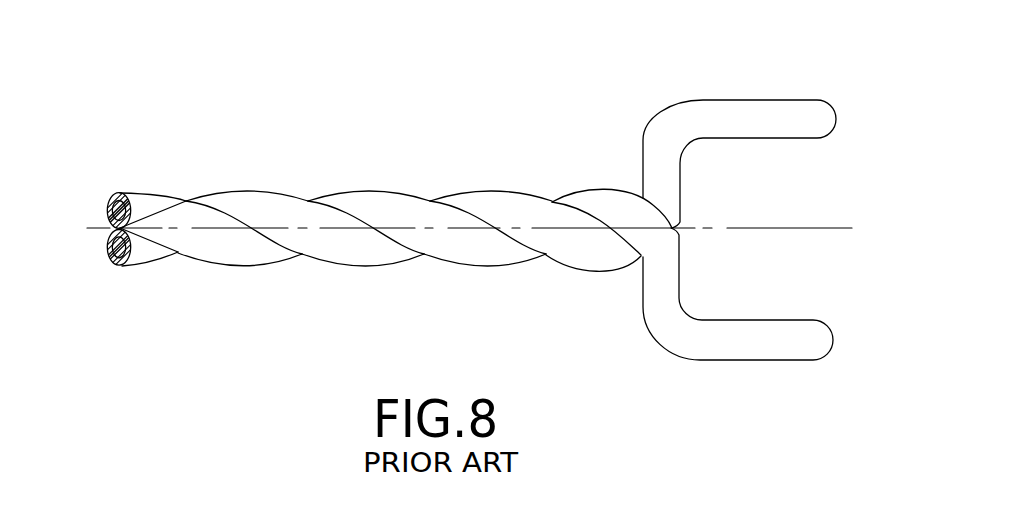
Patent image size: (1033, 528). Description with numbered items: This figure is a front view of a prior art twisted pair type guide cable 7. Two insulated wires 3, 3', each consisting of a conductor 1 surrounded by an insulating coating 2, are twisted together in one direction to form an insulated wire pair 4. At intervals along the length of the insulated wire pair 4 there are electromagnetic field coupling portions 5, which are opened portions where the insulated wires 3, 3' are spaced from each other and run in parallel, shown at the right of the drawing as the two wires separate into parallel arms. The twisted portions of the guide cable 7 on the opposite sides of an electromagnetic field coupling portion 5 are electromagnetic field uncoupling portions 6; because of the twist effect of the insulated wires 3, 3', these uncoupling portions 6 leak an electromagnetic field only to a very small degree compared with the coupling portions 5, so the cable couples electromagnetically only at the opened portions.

The conductor 1 is at (110, 203).
The insulating coating 2 is at (128, 198).
The insulated wire 3 is at (396, 177).
The insulated wire 3' is at (380, 285).
The insulated wire pair 4 is at (500, 172).
The electromagnetic field coupling portion 5 is at (753, 98).
The electromagnetic field uncoupling portion 6 is at (430, 254).
The guide cable 7 is at (500, 287).